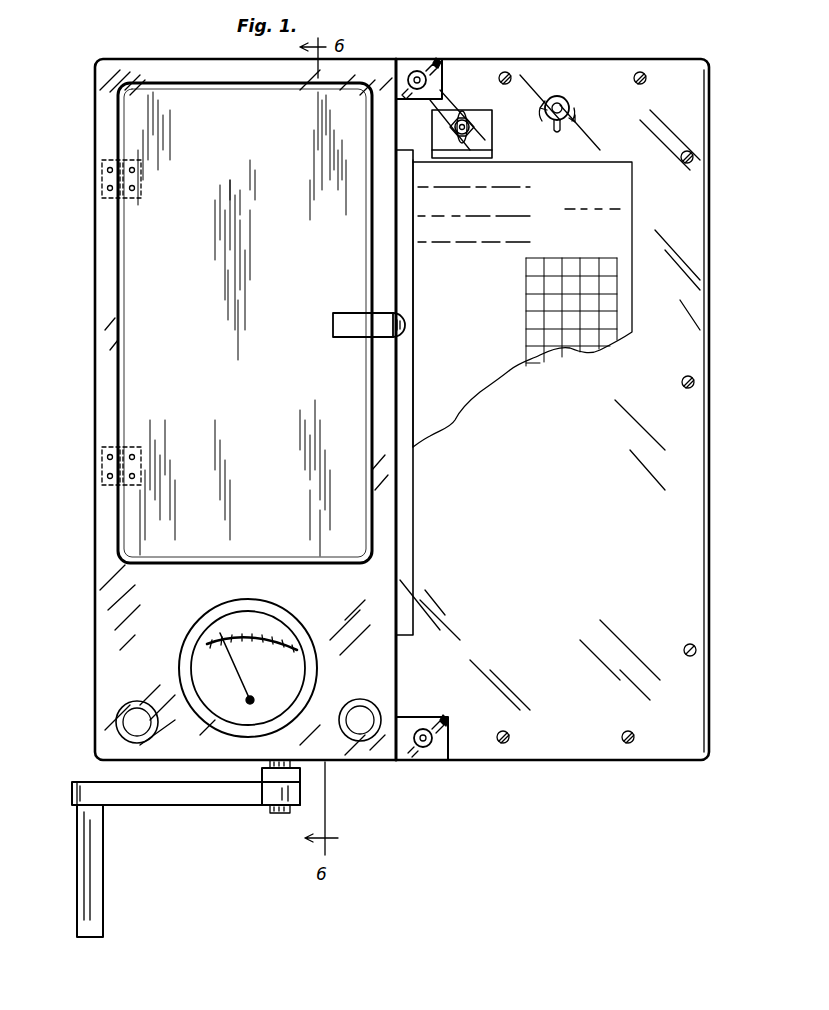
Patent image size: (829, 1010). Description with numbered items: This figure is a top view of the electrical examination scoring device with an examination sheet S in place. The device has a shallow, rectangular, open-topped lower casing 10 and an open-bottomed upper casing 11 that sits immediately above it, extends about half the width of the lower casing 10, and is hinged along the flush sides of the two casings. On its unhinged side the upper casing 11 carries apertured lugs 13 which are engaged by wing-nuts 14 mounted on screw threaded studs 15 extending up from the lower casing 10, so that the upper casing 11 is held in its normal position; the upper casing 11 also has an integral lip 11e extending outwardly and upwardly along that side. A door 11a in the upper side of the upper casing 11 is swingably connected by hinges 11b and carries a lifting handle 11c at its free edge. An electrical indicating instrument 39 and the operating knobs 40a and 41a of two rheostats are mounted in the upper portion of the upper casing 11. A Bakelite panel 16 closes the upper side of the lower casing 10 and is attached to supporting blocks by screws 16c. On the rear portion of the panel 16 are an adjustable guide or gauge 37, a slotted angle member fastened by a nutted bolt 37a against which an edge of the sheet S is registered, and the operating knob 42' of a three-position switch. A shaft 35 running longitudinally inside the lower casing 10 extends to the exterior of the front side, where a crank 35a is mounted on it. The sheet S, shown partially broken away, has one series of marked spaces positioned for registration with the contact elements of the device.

The lower casing 10 is at (681, 762).
The upper casing 11 is at (115, 668).
The door 11a is at (157, 369).
The hinges 11b is at (100, 180).
The lifting handle 11c is at (362, 327).
The lip 11e is at (405, 568).
The lugs 13 is at (430, 70).
The wing-nuts 14 is at (432, 62).
The screw threaded studs 15 is at (416, 70).
The panel 16 is at (690, 594).
The screws 16c is at (640, 72).
The shaft 35 is at (276, 814).
The crank 35a is at (190, 792).
The adjustable guide or gauge 37 is at (490, 140).
The nutted bolt 37a is at (455, 130).
The electrical indicating instrument 39 is at (288, 683).
The operating knob 40a is at (137, 718).
The operating knob 41a is at (362, 718).
The operating knob 42' is at (573, 108).
The sheet S is at (600, 183).